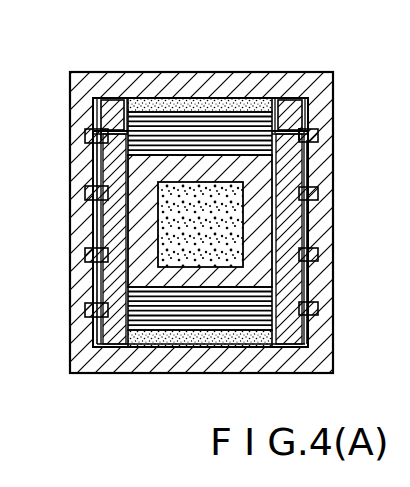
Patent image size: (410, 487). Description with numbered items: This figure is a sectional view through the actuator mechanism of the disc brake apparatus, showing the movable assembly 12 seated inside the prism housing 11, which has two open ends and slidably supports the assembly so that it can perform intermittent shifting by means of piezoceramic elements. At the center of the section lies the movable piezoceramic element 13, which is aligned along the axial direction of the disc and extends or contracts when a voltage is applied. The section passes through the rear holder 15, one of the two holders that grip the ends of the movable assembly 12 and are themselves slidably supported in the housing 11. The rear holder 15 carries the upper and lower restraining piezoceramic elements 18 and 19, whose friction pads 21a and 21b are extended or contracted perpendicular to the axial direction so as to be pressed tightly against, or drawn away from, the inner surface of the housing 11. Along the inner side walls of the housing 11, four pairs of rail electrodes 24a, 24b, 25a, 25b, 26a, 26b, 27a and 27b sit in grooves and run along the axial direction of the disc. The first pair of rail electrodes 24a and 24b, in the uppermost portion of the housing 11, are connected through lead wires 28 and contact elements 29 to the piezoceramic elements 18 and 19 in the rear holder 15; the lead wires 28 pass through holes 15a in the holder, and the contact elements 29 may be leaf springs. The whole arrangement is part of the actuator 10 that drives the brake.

The device assembly 10 is at (273, 63).
The prism housing 11 is at (325, 100).
The movable assembly 12 is at (330, 352).
The movable piezoceramic element 13 is at (237, 222).
The rear holder 15 is at (99, 222).
The holes 15a is at (108, 128).
The upper restraining piezoceramic element 18 is at (226, 133).
The lower restraining piezoceramic element 19 is at (172, 323).
The friction pad 21a is at (167, 108).
The friction pad 21b is at (213, 337).
The rail electrode 24a is at (85, 135).
The rail electrode 24b is at (319, 137).
The rail electrode 25a is at (85, 193).
The rail electrode 25b is at (316, 194).
The rail electrode 26a is at (85, 255).
The rail electrode 26b is at (318, 252).
The rail electrode 27a is at (85, 310).
The rail electrode 27b is at (318, 309).
The lead wires 28 is at (97, 142).
The contact elements 29 is at (103, 128).